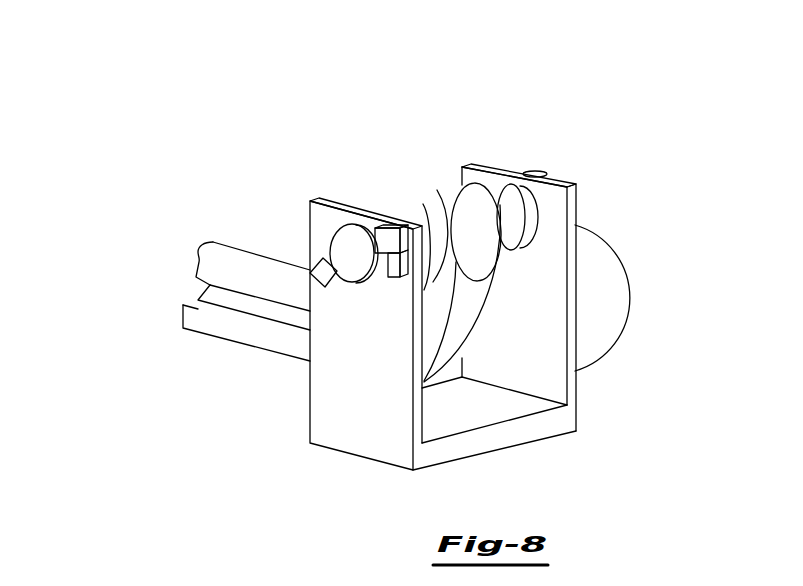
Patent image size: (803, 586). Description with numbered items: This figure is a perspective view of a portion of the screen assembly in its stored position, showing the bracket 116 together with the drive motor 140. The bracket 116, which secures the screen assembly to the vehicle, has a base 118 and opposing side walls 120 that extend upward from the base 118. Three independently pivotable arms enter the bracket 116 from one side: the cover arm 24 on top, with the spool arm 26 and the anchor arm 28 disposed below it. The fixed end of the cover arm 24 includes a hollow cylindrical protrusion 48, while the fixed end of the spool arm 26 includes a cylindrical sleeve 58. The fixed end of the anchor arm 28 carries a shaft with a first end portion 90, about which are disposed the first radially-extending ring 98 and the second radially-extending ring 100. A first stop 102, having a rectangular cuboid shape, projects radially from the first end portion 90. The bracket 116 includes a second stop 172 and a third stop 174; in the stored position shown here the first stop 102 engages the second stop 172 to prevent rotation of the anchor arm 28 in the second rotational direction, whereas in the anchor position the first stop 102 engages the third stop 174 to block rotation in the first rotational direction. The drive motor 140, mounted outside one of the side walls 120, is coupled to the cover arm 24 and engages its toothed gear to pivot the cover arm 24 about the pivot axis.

The cover arm 24 is at (207, 270).
The spool arm 26 is at (213, 297).
The anchor arm 28 is at (197, 318).
The first end portion 90 is at (343, 247).
The third stop 174 is at (325, 287).
The second stop 172 is at (379, 226).
The first stop 102 is at (382, 270).
The first radially-extending ring 98 is at (420, 196).
The cylindrical sleeve 58 is at (440, 194).
The second radially-extending ring 100 is at (473, 182).
The cylindrical protrusion 48 is at (517, 194).
The bracket 116 is at (562, 182).
The side walls 120 is at (570, 212).
The drive motor 140 is at (613, 307).
The base 118 is at (545, 426).